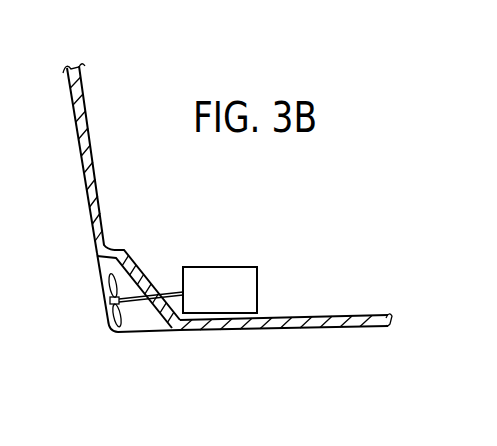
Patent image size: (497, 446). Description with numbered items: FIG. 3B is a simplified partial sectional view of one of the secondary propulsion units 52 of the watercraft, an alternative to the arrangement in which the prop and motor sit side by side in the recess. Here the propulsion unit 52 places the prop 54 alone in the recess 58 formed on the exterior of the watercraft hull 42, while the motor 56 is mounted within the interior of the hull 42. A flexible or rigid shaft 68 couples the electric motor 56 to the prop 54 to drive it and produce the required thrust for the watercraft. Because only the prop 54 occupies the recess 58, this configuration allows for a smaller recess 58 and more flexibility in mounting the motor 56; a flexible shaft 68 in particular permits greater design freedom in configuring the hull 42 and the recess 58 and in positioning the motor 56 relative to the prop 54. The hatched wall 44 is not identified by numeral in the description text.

The watercraft hull 42 is at (322, 327).
The side wall 44 is at (95, 155).
The secondary propulsion unit 52 is at (267, 268).
The prop 54 is at (108, 316).
The motor 56 is at (218, 267).
The recess 58 is at (140, 320).
The shaft 68 is at (166, 286).